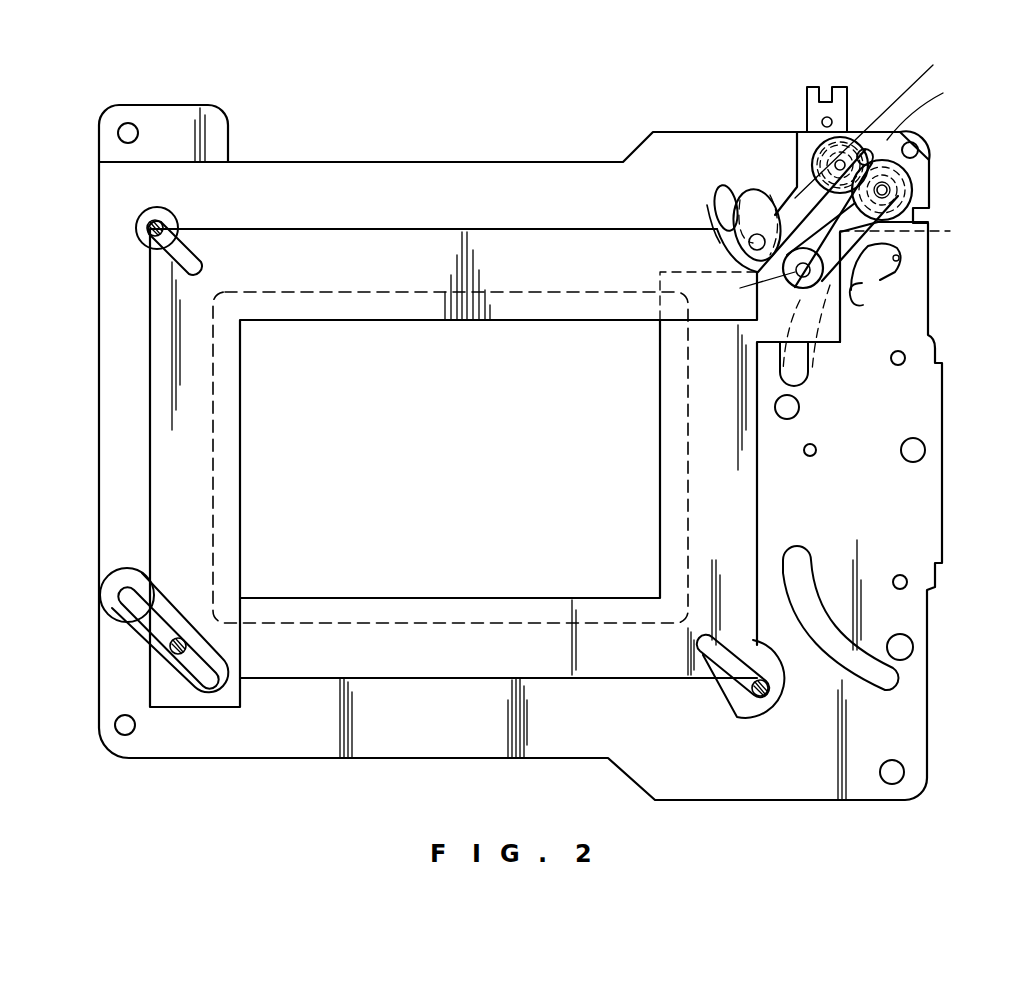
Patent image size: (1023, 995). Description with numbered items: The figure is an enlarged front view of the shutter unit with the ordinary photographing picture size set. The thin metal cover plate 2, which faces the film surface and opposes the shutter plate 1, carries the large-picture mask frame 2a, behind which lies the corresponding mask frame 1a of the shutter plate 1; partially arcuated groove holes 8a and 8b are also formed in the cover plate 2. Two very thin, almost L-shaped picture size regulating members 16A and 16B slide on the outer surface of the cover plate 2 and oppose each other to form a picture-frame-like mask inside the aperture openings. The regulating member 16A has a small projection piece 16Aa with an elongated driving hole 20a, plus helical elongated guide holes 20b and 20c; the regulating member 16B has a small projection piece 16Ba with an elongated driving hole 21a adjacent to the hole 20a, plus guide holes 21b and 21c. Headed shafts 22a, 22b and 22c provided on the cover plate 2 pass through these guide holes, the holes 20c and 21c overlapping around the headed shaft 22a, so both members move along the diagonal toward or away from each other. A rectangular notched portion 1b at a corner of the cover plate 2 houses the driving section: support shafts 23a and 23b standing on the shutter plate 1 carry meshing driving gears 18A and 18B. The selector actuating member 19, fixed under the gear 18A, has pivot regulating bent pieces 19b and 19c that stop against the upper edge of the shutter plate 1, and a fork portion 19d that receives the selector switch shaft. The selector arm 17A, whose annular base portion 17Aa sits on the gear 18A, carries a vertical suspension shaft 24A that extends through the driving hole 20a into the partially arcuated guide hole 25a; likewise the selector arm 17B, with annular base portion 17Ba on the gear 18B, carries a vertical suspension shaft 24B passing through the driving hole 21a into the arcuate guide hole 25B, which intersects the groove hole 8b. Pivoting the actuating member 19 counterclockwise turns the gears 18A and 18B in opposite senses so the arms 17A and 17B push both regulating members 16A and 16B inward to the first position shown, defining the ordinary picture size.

The cover plate 2 is at (698, 787).
The large-picture mask frame 2a is at (450, 457).
The large-picture mask frame 1a is at (330, 622).
The shutter plate 1 is at (920, 106).
The notched portion 1b is at (930, 210).
The partially arcuated groove hole 8a is at (893, 673).
The partially arcuated groove hole 8b is at (899, 258).
The picture size regulating member 16A is at (390, 243).
The small projection piece 16Aa is at (723, 187).
The picture size regulating member 16B is at (473, 668).
The small projection piece 16Ba is at (830, 335).
The selector arm 17A is at (762, 208).
The annular base portion 17Aa is at (787, 183).
The selector arm 17B is at (858, 280).
The annular base portion 17Ba is at (888, 140).
The driving gear 18A is at (857, 138).
The driving gear 18B is at (928, 183).
The selector actuating member 19 is at (845, 127).
The pivot regulating bent piece 19b is at (797, 160).
The pivot regulating bent piece 19c is at (848, 112).
The fork portion 19d is at (835, 93).
The elongated driving hole 20a is at (753, 227).
The elongated guide hole 20b is at (185, 245).
The elongated guide hole 20c is at (210, 683).
The elongated driving hole 21a is at (927, 230).
The guide hole 21b is at (708, 658).
The guide hole 21c is at (125, 597).
The headed shaft 22a is at (170, 652).
The headed shaft 22b is at (765, 697).
The headed shaft 22c is at (148, 235).
The support shaft 23a is at (889, 119).
The support shaft 23b is at (888, 190).
The vertical suspension shaft 24A is at (718, 228).
The vertical suspension shaft 24B is at (740, 287).
The partially arcuated guide hole 25a is at (717, 197).
The partially arcuated guide hole 25B is at (862, 303).